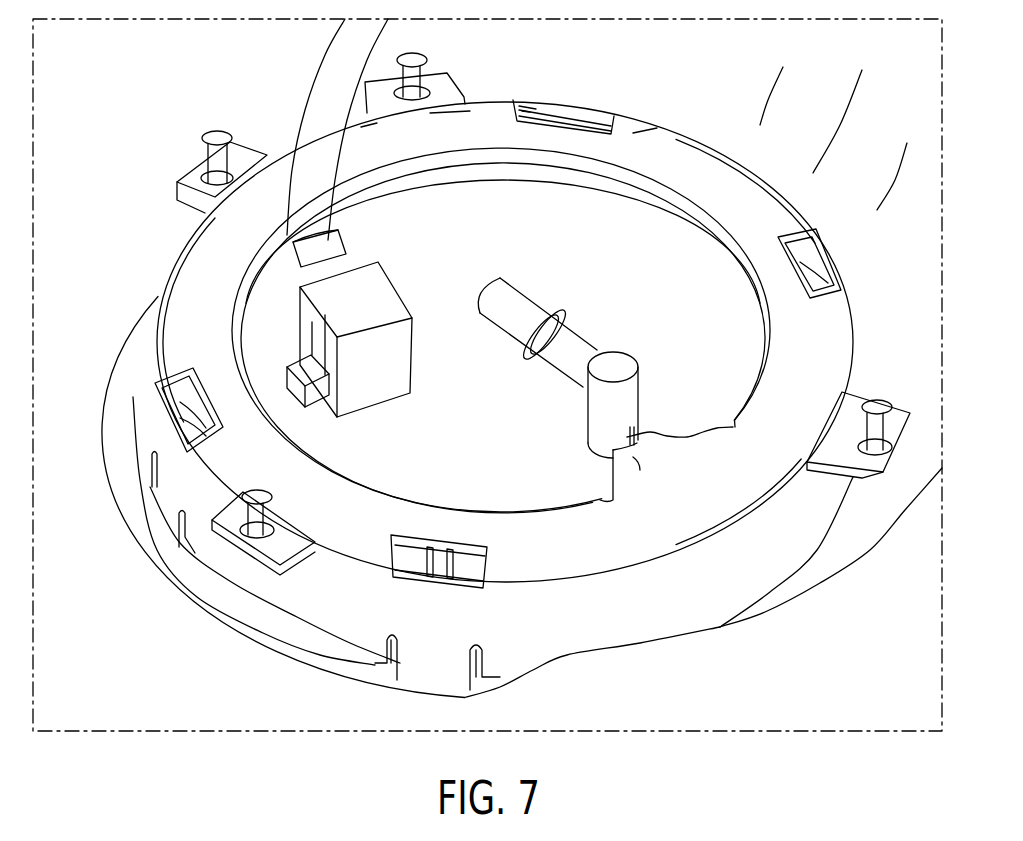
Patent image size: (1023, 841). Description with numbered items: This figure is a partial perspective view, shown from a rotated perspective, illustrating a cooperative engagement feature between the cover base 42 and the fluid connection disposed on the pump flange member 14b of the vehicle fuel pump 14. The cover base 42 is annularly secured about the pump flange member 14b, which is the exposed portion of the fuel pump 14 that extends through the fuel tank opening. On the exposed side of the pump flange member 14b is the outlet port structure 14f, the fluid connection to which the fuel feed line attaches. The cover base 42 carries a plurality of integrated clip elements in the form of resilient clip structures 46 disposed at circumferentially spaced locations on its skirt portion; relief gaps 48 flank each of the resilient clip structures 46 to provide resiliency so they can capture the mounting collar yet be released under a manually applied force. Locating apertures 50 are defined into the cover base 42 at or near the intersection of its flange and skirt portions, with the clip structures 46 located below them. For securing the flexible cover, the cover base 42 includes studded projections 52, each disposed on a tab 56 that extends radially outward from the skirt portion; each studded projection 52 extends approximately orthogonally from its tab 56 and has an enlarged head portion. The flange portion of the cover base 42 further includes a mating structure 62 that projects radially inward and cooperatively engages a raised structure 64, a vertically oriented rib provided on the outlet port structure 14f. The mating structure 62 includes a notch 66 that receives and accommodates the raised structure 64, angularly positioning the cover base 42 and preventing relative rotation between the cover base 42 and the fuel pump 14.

The vehicle fuel pump 14 is at (630, 240).
The pump flange member 14b is at (577, 222).
The outlet port structure 14f is at (640, 383).
The cover base 42 is at (185, 267).
The resilient clip structures 46 is at (160, 505).
The relief gaps 48 is at (147, 462).
The apertures 50 is at (547, 110).
The studded projection 52 is at (210, 162).
The tab 56 is at (187, 187).
The mating structure 62 is at (664, 447).
The raised structure 64 is at (627, 433).
The notch 66 is at (612, 477).